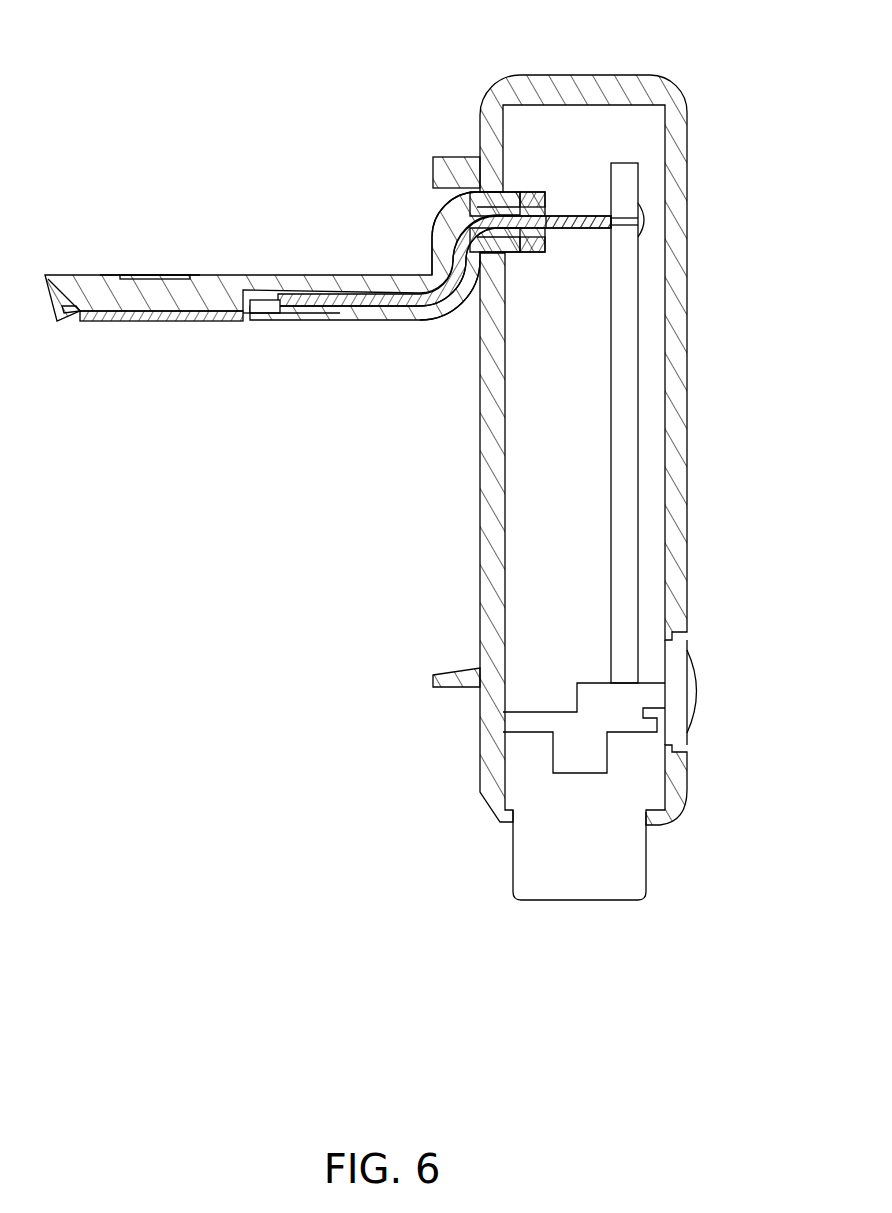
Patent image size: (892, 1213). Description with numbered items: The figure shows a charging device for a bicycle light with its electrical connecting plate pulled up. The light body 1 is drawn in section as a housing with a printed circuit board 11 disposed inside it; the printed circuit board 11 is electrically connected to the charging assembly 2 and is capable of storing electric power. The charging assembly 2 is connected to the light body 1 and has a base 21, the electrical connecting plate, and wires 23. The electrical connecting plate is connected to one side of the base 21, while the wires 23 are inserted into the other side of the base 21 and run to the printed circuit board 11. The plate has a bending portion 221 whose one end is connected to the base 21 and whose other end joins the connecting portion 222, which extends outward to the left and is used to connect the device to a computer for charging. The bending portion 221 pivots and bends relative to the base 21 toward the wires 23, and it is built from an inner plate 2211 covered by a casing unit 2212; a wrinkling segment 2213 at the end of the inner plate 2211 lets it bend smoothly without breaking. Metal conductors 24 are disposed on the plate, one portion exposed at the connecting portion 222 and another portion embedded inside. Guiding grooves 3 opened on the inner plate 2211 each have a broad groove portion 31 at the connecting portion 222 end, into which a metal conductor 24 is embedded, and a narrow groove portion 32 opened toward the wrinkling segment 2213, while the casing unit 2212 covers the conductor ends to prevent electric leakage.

The light body 1 is at (652, 91).
The printed circuit board 11 is at (622, 372).
The charging assembly 2 is at (200, 172).
The base 21 is at (583, 216).
The bending portion 221 is at (430, 357).
The inner plate 2211 is at (411, 298).
The casing unit 2212 is at (363, 316).
The wrinkling segment 2213 is at (456, 304).
The connecting portion 222 is at (95, 285).
The wires 23 is at (545, 192).
The metal conductors 24 is at (115, 323).
The guiding grooves 3 is at (281, 394).
The broad groove portion 31 is at (262, 314).
The narrow groove portion 32 is at (318, 314).